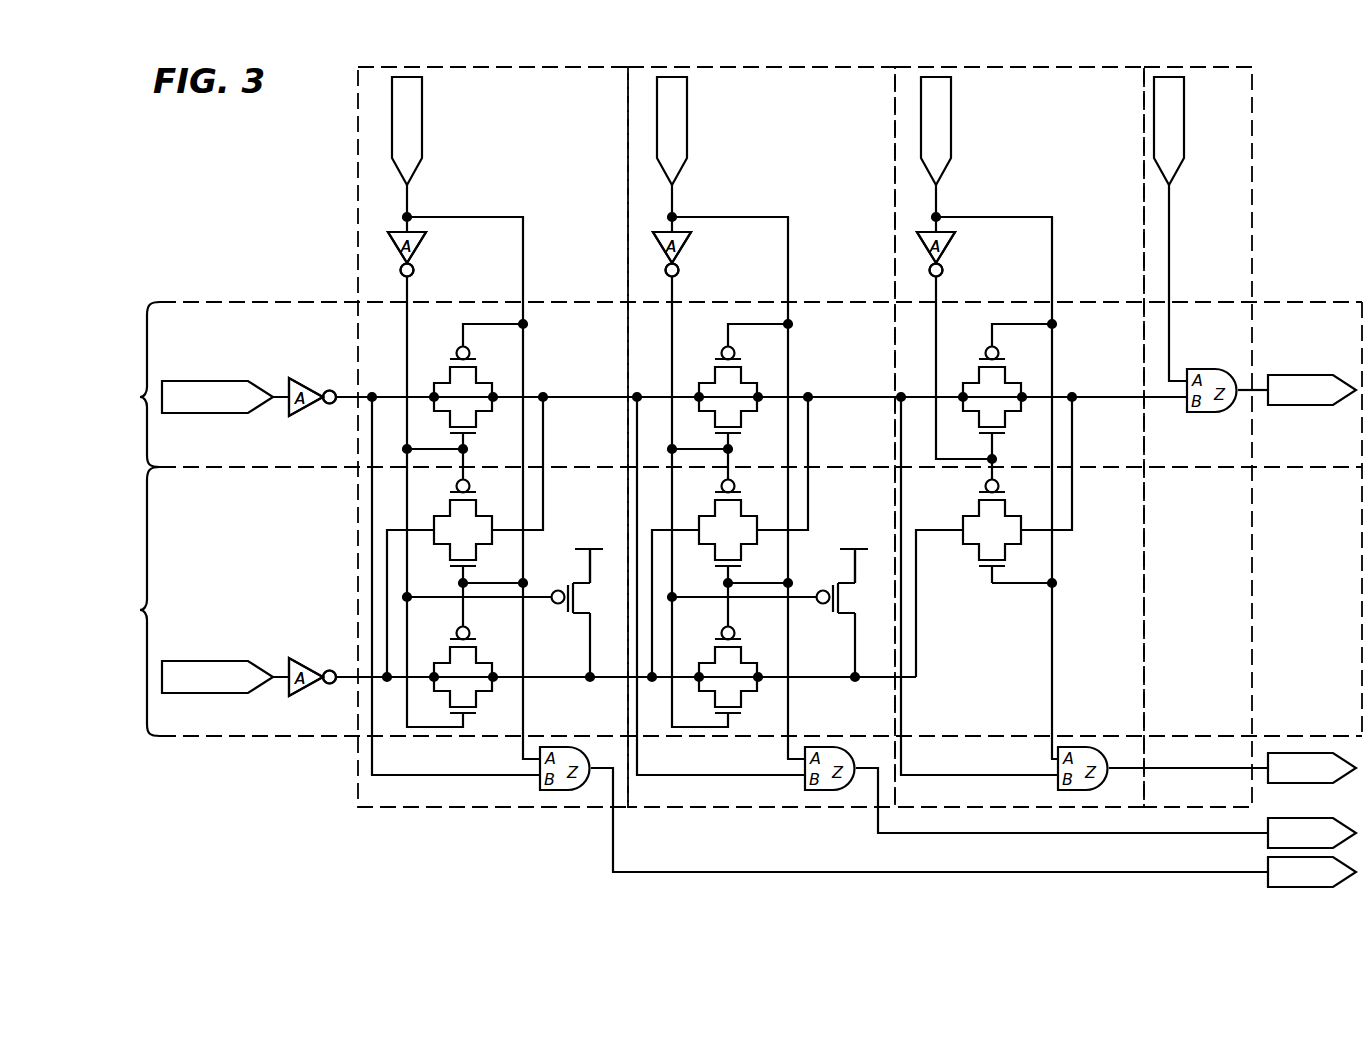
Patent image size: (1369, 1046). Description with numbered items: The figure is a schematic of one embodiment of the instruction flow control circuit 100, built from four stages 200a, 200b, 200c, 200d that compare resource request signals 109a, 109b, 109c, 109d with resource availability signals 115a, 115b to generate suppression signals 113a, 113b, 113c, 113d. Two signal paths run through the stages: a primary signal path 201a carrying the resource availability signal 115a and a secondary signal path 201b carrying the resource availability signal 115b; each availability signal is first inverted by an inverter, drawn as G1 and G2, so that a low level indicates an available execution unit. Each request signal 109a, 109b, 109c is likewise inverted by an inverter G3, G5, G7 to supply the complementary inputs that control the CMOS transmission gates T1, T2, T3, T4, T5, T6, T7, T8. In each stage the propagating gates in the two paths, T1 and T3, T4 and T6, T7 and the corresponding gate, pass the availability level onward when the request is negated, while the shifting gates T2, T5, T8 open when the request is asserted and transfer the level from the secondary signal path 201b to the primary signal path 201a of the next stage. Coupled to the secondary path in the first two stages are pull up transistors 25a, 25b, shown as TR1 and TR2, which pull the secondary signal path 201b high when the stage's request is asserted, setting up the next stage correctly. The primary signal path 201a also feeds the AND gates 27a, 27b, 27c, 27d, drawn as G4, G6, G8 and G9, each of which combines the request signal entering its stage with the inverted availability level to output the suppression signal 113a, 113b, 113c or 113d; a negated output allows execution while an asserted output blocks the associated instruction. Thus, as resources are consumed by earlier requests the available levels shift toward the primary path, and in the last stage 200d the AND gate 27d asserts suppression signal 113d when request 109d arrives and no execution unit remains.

The instruction flow control circuit 100 is at (290, 783).
The resource request signal 109a is at (409, 195).
The resource request signal 109b is at (731, 418).
The resource request signal 109c is at (989, 418).
The resource request signal 109d is at (1170, 192).
The suppression signal 113a is at (612, 851).
The suppression signal 113b is at (1065, 808).
The suppression signal 113c is at (1232, 738).
The suppression signal 113d is at (1266, 385).
The resource availability signal 115a is at (279, 394).
The resource availability signal 115b is at (282, 673).
The first stage 200a is at (536, 67).
The second stage 200b is at (761, 422).
The third stage 200c is at (1019, 422).
The last stage 200d is at (1216, 67).
The primary signal path 201a is at (712, 519).
The secondary signal path 201b is at (714, 601).
The pull up transistor 25a is at (577, 549).
The pull up transistor 25b is at (843, 543).
The AND gate 27a is at (540, 790).
The AND gate 27b is at (719, 602).
The AND gate 27c is at (977, 602).
The AND gate 27d is at (1188, 411).
The inverter G1 is at (316, 382).
The inverter G2 is at (316, 661).
The inverter G3 is at (424, 414).
The AND gate G4 is at (581, 766).
The inverter G5 is at (689, 414).
The AND gate G6 is at (846, 766).
The inverter G7 is at (954, 345).
The AND gate G8 is at (1099, 766).
The AND gate G9 is at (1212, 376).
The pass transistor T1 is at (473, 389).
The pass transistor T2 is at (473, 522).
The pass transistor T3 is at (473, 670).
The pass transistor T4 is at (738, 389).
The pass transistor T5 is at (738, 522).
The pass transistor T6 is at (738, 670).
The pass transistor T7 is at (1003, 389).
The pass transistor T8 is at (1002, 522).
The pull-up transistor TR1 is at (583, 613).
The pull-up transistor TR2 is at (848, 613).